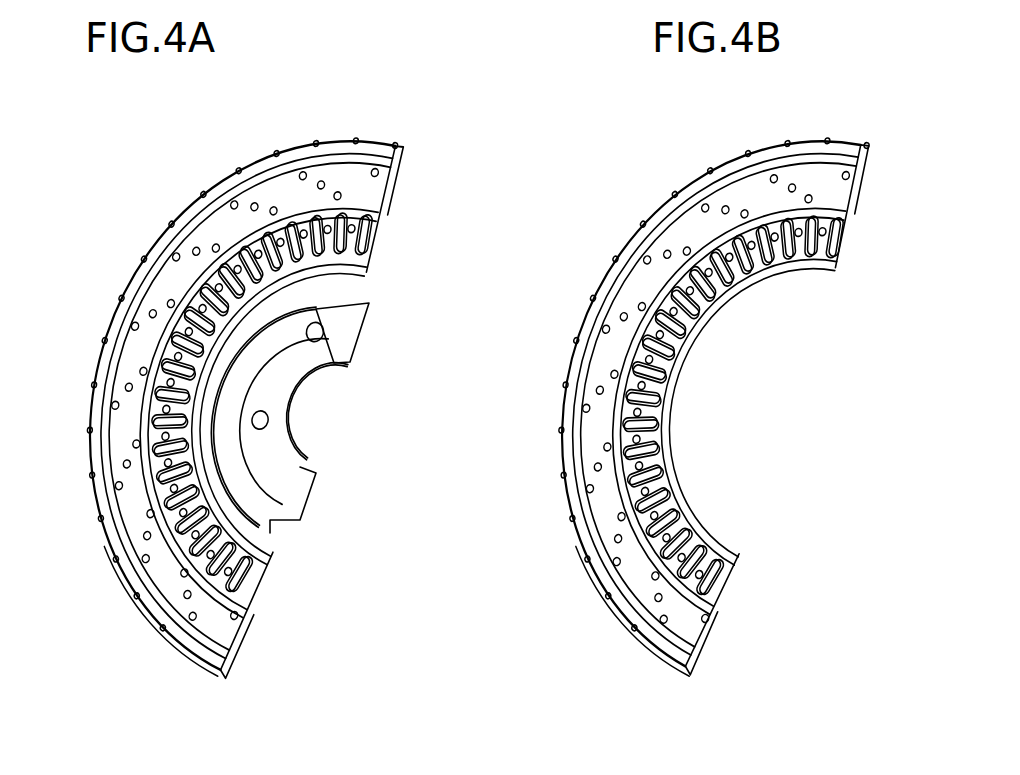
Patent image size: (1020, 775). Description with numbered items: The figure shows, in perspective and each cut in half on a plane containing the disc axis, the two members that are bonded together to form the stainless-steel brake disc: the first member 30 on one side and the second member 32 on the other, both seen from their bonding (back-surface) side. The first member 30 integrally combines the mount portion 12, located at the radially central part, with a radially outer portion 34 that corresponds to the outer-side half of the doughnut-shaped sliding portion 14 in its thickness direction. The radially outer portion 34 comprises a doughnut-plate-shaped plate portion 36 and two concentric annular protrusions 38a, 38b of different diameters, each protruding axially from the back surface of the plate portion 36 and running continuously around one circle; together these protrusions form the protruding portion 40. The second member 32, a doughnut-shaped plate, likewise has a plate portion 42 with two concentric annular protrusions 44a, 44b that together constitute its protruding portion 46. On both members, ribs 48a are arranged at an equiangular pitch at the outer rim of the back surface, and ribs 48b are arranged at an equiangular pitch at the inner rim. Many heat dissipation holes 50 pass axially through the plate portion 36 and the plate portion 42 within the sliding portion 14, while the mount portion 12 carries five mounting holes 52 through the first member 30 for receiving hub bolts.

In FIG. 4A, the mount portion 12 is at (376, 326).
In FIG. 4A, the sliding portion 14 is at (216, 377).
In FIG. 4B, the sliding portion 14 is at (572, 560).
In FIG. 4A, the first member 30 is at (142, 188).
In FIG. 4B, the second member 32 is at (706, 142).
In FIG. 4A, the radially outer portion 34 is at (398, 195).
In FIG. 4A, the plate portion 36 is at (343, 183).
In FIG. 4A, the annular protrusion 38a is at (273, 167).
In FIG. 4A, the annular protrusion 38b is at (240, 237).
In FIG. 4A, the protruding portion 40 is at (280, 104).
In FIG. 4B, the plate portion 42 is at (812, 192).
In FIG. 4B, the annular protrusion 44a is at (780, 162).
In FIG. 4B, the annular protrusion 44b is at (742, 227).
In FIG. 4B, the protruding portion 46 is at (798, 90).
In FIG. 4A, the ribs 48a is at (133, 595).
In FIG. 4B, the ribs 48a is at (628, 630).
In FIG. 4A, the ribs 48b is at (228, 532).
In FIG. 4B, the ribs 48b is at (692, 542).
In FIG. 4A, the heat dissipation holes 50 is at (137, 327).
In FIG. 4B, the heat dissipation holes 50 is at (650, 243).
In FIG. 4A, the mounting holes 52 is at (318, 340).